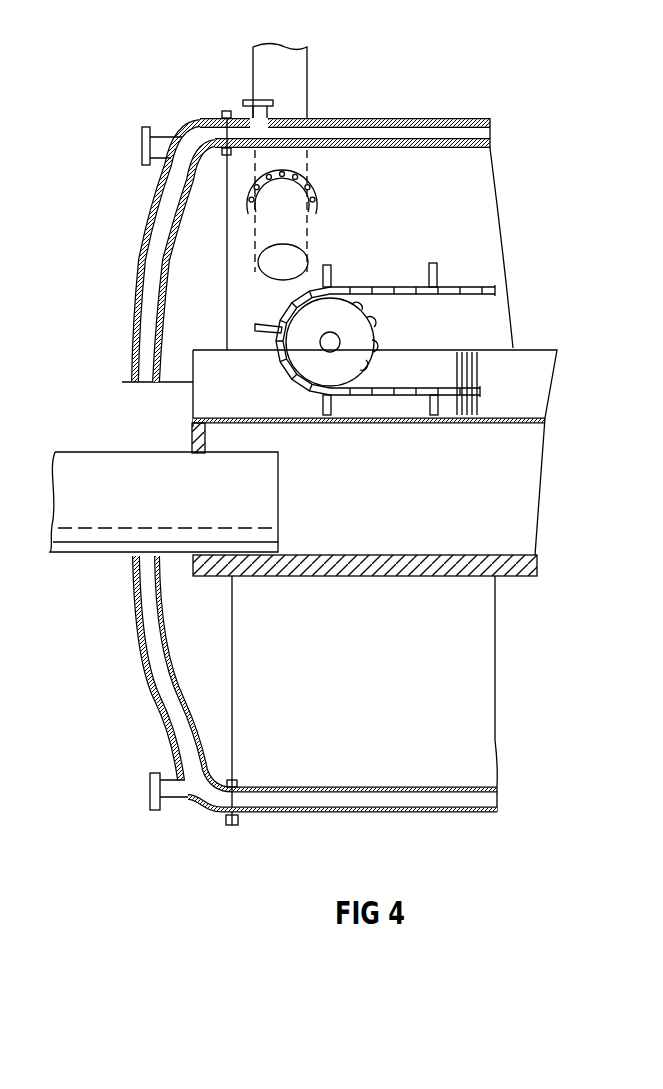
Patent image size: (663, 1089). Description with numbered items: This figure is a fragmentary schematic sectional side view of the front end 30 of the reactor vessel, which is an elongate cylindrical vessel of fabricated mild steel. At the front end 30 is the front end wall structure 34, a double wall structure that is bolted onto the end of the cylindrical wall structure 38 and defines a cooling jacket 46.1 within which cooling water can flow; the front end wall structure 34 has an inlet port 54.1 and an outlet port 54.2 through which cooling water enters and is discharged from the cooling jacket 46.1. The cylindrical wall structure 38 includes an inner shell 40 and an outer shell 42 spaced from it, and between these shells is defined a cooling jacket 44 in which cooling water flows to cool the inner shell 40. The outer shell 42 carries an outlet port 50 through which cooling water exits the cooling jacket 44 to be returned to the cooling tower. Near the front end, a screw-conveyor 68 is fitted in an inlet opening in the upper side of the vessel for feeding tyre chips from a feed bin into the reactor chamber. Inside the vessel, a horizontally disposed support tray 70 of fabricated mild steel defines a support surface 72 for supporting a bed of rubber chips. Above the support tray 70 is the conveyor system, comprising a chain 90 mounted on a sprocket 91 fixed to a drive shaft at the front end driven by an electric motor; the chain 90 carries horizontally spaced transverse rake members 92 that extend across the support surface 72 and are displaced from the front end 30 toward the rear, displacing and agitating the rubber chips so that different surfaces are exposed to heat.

The front end 30 is at (108, 621).
The front end wall structure 34 is at (125, 318).
The cylindrical wall structure 38 is at (398, 112).
The inner shell 40 is at (463, 139).
The outer shell 42 is at (430, 118).
The cooling jacket 44 is at (448, 808).
The cooling jacket 46.1 is at (155, 250).
The outlet port 50 is at (247, 102).
The inlet port 54.1 is at (152, 812).
The outlet port 54.2 is at (150, 127).
The screw-conveyor 68 is at (296, 82).
The support tray 70 is at (482, 423).
The support surface 72 is at (520, 412).
The chain 90 is at (398, 290).
The sprocket 91 is at (352, 332).
The rake member 92 is at (260, 326).